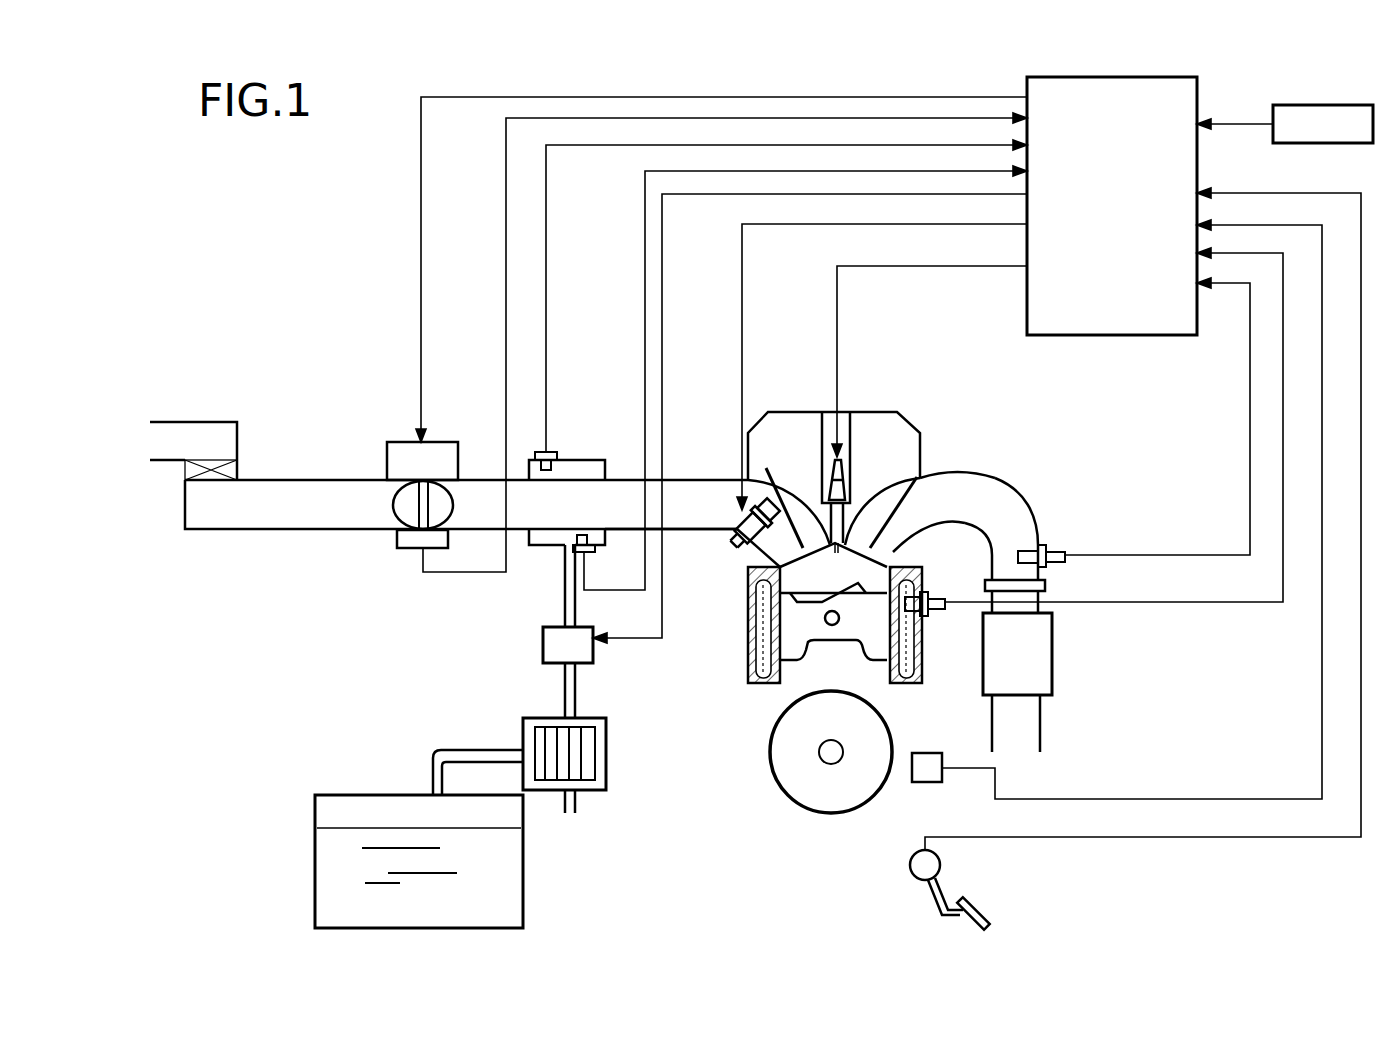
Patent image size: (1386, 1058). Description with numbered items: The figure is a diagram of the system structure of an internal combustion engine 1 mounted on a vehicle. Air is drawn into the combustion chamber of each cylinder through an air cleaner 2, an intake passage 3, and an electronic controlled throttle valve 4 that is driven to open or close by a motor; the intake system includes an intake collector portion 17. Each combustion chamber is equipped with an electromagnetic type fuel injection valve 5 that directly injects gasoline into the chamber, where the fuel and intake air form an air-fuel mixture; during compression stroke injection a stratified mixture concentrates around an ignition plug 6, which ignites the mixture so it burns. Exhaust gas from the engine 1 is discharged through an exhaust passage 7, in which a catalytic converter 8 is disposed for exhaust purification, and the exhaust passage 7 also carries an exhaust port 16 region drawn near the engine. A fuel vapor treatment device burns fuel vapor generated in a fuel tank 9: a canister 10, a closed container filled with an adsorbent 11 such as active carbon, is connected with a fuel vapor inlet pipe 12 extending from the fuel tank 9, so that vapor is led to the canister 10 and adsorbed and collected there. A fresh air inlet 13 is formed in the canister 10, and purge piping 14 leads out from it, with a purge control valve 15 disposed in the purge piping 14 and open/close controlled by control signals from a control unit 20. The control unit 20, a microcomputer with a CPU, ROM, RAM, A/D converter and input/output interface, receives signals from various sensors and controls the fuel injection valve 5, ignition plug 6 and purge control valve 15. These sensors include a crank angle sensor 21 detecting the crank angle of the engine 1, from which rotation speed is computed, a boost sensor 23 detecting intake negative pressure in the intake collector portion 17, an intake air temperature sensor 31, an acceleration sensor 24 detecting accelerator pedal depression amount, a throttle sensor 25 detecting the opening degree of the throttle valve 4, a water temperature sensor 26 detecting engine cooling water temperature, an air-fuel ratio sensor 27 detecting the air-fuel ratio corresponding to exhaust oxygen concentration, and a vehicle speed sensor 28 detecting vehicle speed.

The internal combustion engine 1 is at (735, 654).
The air cleaner 2 is at (200, 422).
The intake passage 3 is at (232, 512).
The electronic controlled throttle valve 4 is at (437, 441).
The fuel injection valve 5 is at (730, 530).
The ignition plug 6 is at (823, 483).
The exhaust passage 7 is at (1010, 505).
The catalytic converter 8 is at (1053, 652).
The fuel tank 9 is at (333, 795).
The canister 10 is at (548, 750).
The adsorbent 11 is at (595, 762).
The fuel vapor inlet pipe 12 is at (437, 778).
The fresh air inlet 13 is at (570, 812).
The purge piping 14 is at (565, 690).
The purge control valve 15 is at (587, 665).
The exhaust port 16 is at (965, 476).
The intake collector portion 17 is at (540, 546).
The control unit 20 is at (1113, 337).
The crank angle sensor 21 is at (925, 784).
The boost sensor 23 is at (552, 452).
The acceleration sensor 24 is at (909, 872).
The throttle sensor 25 is at (408, 548).
The water temperature sensor 26 is at (934, 618).
The air-fuel ratio sensor 27 is at (1056, 545).
The vehicle speed sensor 28 is at (1325, 105).
The intake air temperature sensor 31 is at (592, 552).